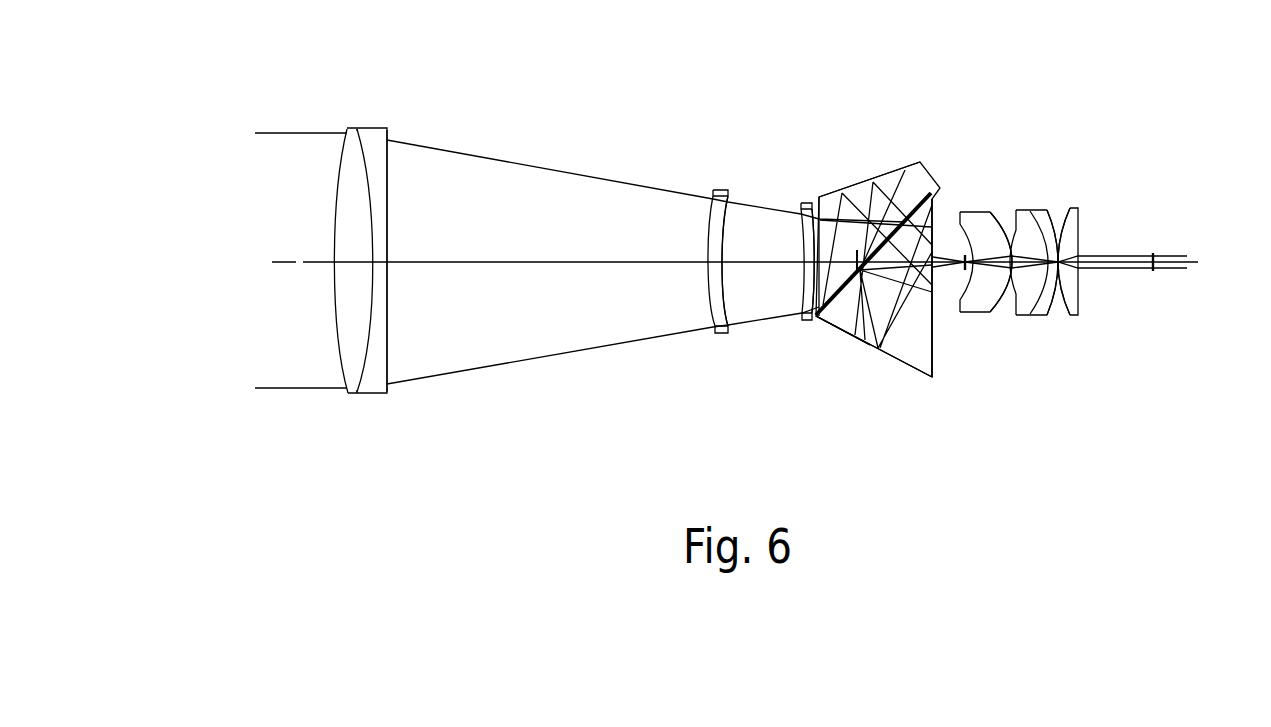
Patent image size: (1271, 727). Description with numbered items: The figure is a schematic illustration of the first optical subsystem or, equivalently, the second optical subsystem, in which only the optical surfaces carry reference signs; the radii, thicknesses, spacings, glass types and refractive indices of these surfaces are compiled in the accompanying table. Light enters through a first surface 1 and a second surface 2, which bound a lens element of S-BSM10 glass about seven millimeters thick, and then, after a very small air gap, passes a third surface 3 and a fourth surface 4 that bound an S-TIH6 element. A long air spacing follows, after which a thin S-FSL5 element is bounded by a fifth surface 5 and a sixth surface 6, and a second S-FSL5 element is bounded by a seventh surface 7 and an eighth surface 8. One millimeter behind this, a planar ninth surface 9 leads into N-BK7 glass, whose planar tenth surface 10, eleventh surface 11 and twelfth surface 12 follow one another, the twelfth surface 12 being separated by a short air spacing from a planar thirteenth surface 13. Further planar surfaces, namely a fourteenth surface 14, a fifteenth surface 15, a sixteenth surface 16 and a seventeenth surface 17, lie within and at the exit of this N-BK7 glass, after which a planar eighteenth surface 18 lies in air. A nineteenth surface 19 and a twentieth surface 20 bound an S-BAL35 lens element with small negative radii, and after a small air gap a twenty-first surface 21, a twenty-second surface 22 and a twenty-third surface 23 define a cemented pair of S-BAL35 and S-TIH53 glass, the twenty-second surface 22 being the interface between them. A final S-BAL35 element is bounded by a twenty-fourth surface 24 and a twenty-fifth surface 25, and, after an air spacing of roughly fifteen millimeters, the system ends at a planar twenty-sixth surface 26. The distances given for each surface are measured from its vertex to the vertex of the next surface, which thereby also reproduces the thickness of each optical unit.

The surface 1 is at (340, 146).
The surface 2 is at (370, 328).
The surface 3 is at (370, 330).
The surface 4 is at (388, 146).
The surface 5 is at (713, 191).
The surface 6 is at (729, 192).
The surface 7 is at (803, 220).
The surface 8 is at (812, 203).
The surface 9 is at (819, 198).
The surface 10 is at (945, 188).
The surface 12 is at (928, 193).
The surface 11 is at (855, 184).
The surface 13 is at (836, 318).
The surface 16 is at (843, 376).
The surface 15 is at (903, 368).
The surface 14 is at (933, 362).
The surface 17 is at (993, 339).
The surface 18 is at (965, 260).
The surface 19 is at (960, 289).
The surface 20 is at (997, 305).
The surface 21 is at (1014, 210).
The surface 22 is at (1047, 210).
The surface 23 is at (1050, 307).
The surface 24 is at (1072, 208).
The surface 25 is at (1080, 305).
The surface 26 is at (1157, 270).